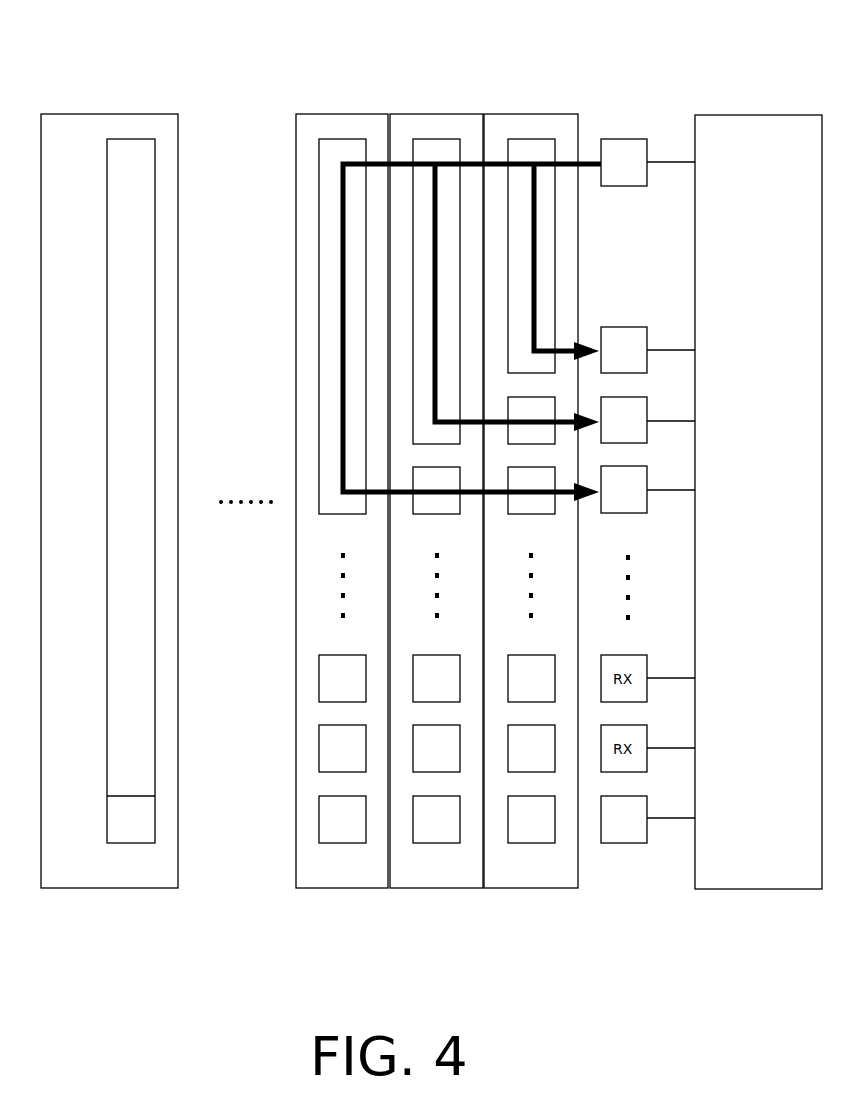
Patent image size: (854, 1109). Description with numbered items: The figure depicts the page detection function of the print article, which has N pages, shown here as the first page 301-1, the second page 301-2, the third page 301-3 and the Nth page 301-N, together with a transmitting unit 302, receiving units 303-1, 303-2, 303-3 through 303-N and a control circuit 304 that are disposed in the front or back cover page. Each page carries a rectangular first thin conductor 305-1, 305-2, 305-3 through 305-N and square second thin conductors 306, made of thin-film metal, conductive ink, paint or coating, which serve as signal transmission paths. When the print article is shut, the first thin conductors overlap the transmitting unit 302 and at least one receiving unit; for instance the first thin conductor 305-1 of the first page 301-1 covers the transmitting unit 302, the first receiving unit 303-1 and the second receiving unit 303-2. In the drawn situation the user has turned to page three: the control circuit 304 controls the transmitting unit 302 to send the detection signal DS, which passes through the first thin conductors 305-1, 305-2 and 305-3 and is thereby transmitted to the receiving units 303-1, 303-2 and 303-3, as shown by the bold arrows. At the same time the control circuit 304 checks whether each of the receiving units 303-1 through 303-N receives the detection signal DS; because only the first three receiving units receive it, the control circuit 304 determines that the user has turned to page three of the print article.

The Nth page 301-N is at (42, 888).
The third page 301-3 is at (330, 877).
The second page 301-2 is at (451, 870).
The first page 301-1 is at (555, 883).
The first thin conductor 305-N is at (131, 139).
The first thin conductor 305-3 is at (342, 142).
The first thin conductor 305-2 is at (431, 142).
The first thin conductor 305-1 is at (513, 142).
The second thin conductor 306 is at (437, 843).
The transmitting unit 302 is at (623, 139).
The detection signal DS is at (587, 162).
The first receiving unit 303-1 is at (629, 327).
The second receiving unit 303-2 is at (601, 397).
The third receiving unit 303-3 is at (648, 513).
The Nth receiving unit 303-N is at (647, 845).
The control circuit 304 is at (743, 127).